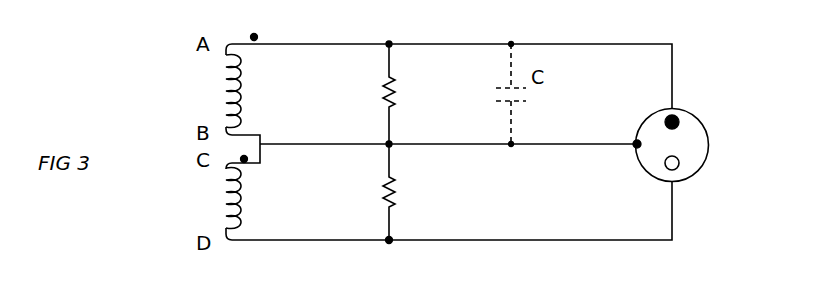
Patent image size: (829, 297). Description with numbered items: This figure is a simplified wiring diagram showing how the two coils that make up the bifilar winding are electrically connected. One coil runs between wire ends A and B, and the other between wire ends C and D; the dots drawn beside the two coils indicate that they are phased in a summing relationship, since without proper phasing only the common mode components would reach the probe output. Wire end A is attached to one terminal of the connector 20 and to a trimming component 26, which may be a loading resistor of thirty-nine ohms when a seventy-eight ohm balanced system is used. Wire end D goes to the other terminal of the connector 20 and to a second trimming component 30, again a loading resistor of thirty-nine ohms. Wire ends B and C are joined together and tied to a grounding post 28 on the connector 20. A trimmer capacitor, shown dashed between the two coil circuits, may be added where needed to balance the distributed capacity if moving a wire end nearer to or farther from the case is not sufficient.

The connector 20 is at (707, 131).
The trimming component 26 is at (395, 95).
The grounding post 28 is at (634, 146).
The trimming component 30 is at (395, 195).